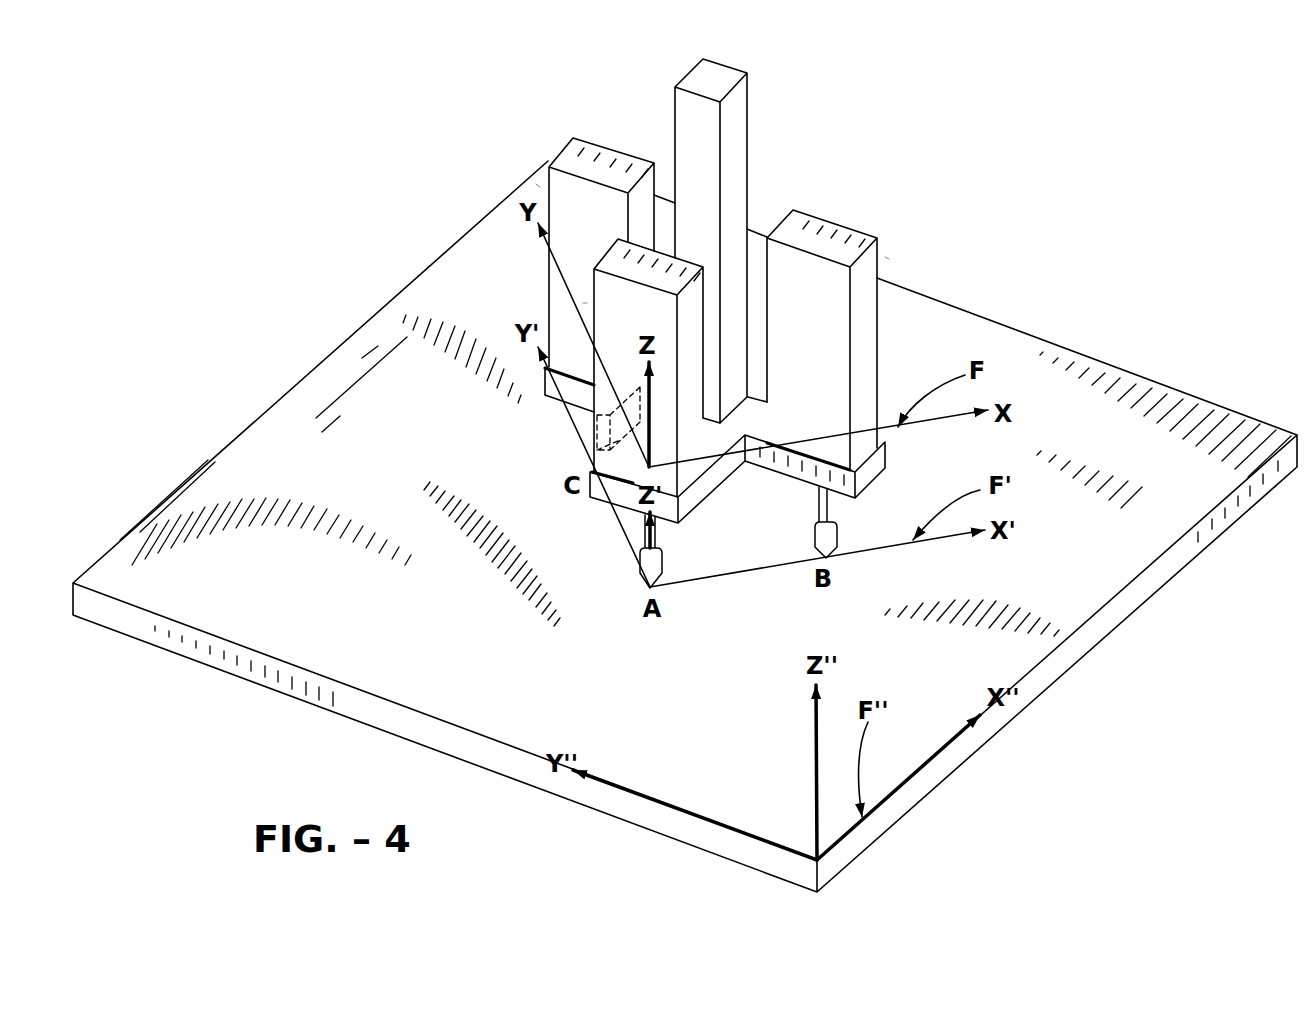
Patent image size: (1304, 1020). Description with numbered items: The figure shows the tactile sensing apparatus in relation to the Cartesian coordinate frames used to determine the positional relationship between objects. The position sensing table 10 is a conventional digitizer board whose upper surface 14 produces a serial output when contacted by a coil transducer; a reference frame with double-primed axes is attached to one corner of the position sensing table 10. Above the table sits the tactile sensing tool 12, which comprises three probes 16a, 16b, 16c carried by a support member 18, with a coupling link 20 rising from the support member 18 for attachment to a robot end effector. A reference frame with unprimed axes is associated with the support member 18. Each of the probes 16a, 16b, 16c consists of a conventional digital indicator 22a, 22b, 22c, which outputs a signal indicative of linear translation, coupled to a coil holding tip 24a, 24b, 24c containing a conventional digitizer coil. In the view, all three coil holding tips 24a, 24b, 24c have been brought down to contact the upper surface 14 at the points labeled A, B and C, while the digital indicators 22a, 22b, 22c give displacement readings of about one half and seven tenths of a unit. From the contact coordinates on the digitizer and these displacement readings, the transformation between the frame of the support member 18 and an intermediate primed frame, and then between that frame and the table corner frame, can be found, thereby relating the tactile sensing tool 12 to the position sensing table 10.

The position sensing table 10 is at (1108, 610).
The tactile sensing tool 12 is at (815, 128).
The upper surface 14 is at (337, 578).
The probe 16a is at (585, 303).
The probe 16b is at (887, 258).
The probe 16c is at (538, 185).
The support member 18 is at (715, 490).
The coupling link 20 is at (717, 72).
The digital indicator 22a is at (692, 293).
The digital indicator 22b is at (872, 348).
The digital indicator 22c is at (574, 148).
The coil holding tip 24a is at (665, 583).
The coil holding tip 24b is at (840, 552).
The coil holding tip 24c is at (598, 455).